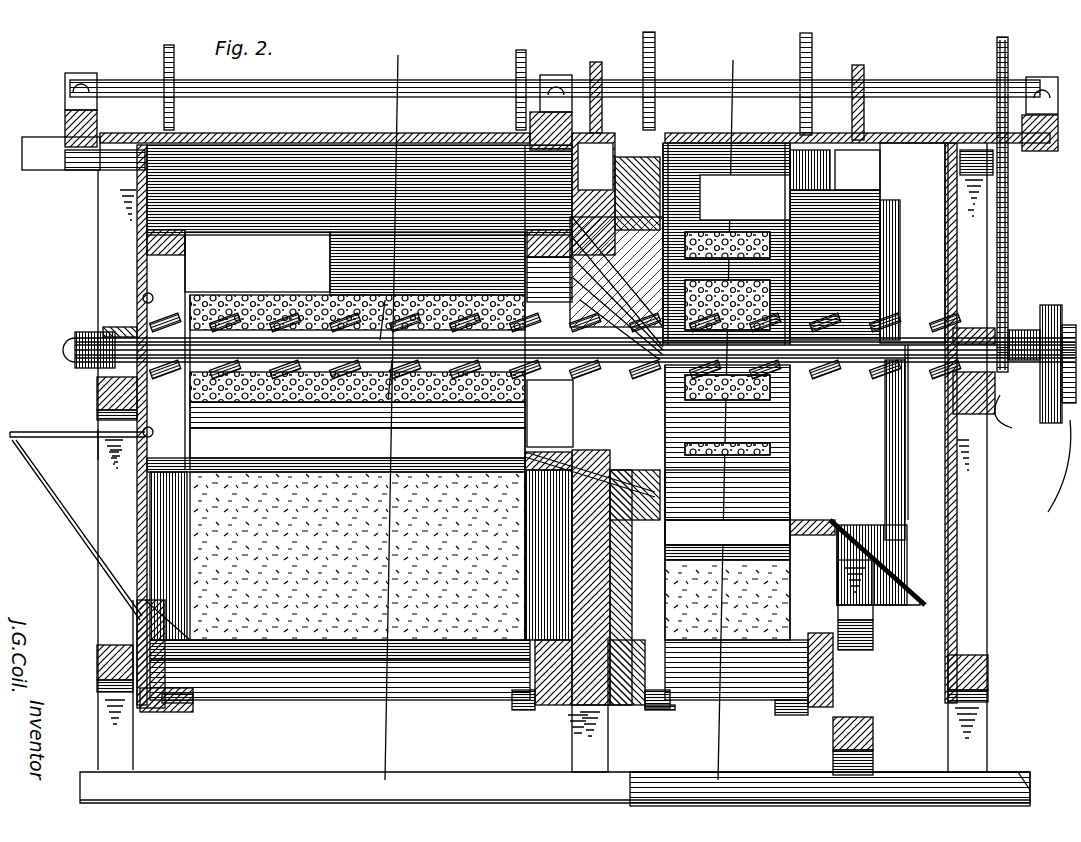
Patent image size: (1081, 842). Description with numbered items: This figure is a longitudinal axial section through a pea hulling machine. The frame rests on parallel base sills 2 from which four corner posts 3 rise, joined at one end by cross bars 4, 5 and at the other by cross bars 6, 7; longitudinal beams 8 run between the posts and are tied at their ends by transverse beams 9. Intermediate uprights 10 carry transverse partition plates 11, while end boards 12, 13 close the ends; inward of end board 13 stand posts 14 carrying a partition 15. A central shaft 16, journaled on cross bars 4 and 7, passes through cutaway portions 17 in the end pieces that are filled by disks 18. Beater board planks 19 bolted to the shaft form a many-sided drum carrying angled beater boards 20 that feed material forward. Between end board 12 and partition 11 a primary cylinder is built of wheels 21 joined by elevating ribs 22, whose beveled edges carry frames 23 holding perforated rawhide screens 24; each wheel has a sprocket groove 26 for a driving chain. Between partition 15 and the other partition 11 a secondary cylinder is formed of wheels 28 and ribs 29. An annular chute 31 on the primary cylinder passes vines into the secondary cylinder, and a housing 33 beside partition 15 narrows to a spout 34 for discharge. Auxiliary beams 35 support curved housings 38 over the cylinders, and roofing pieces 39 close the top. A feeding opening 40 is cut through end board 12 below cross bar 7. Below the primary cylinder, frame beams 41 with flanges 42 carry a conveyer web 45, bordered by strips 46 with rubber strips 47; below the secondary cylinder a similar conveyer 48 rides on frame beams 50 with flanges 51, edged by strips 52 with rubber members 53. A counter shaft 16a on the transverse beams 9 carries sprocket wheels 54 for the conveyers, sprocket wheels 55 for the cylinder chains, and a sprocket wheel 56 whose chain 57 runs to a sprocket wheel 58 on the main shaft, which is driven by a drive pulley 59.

The base sills 2 is at (292, 782).
The corner posts 3 is at (98, 558).
The cross bar 4 is at (955, 400).
The cross bar 5 is at (990, 670).
The cross bar 6 is at (95, 660).
The cross bar 7 is at (95, 400).
The beams 8 is at (48, 158).
The transverse beams 9 is at (1040, 190).
The uprights 10 is at (585, 748).
The partition plates 11 is at (622, 480).
The end board 12 is at (95, 490).
The end board 13 is at (935, 445).
The posts 14 is at (875, 755).
The partition 15 is at (840, 660).
The shaft 16 is at (975, 310).
The counter shaft 16a is at (268, 96).
The cutaway portions 17 is at (990, 295).
The disks 18 is at (140, 316).
The beater board planks 19 is at (430, 410).
The beater boards 20 is at (880, 330).
The wheels 21 is at (500, 470).
The elevating ribs 22 is at (257, 262).
The frames 23 is at (357, 435).
The screens 24 is at (240, 400).
The sprocket groove 26 is at (545, 455).
The wheels 28 is at (820, 510).
The elevating ribs 29 is at (696, 222).
The annular chute 31 is at (605, 470).
The housing 33 is at (915, 143).
The spout 34 is at (877, 562).
The auxiliary beams 35 is at (1058, 405).
The housings 38 is at (680, 143).
The roofing pieces 39 is at (760, 143).
The feeding opening 40 is at (125, 455).
The conveyer supporting frame beams 41 is at (545, 660).
The flanges 42 is at (528, 712).
The conveyer web 45 is at (357, 556).
The strips 46 is at (500, 640).
The rubber strips 47 is at (440, 670).
The conveyer 48 is at (727, 600).
The frame beams 50 is at (835, 680).
The flanges 51 is at (800, 715).
The strips 52 is at (882, 625).
The rubber member 53 is at (720, 675).
The sprocket wheels 54 is at (865, 75).
The sprocket wheels 55 is at (813, 52).
The sprocket wheel 56 is at (1010, 62).
The sprocket chain 57 is at (1010, 248).
The sprocket wheel 58 is at (1012, 419).
The drive pulley 59 is at (1038, 474).